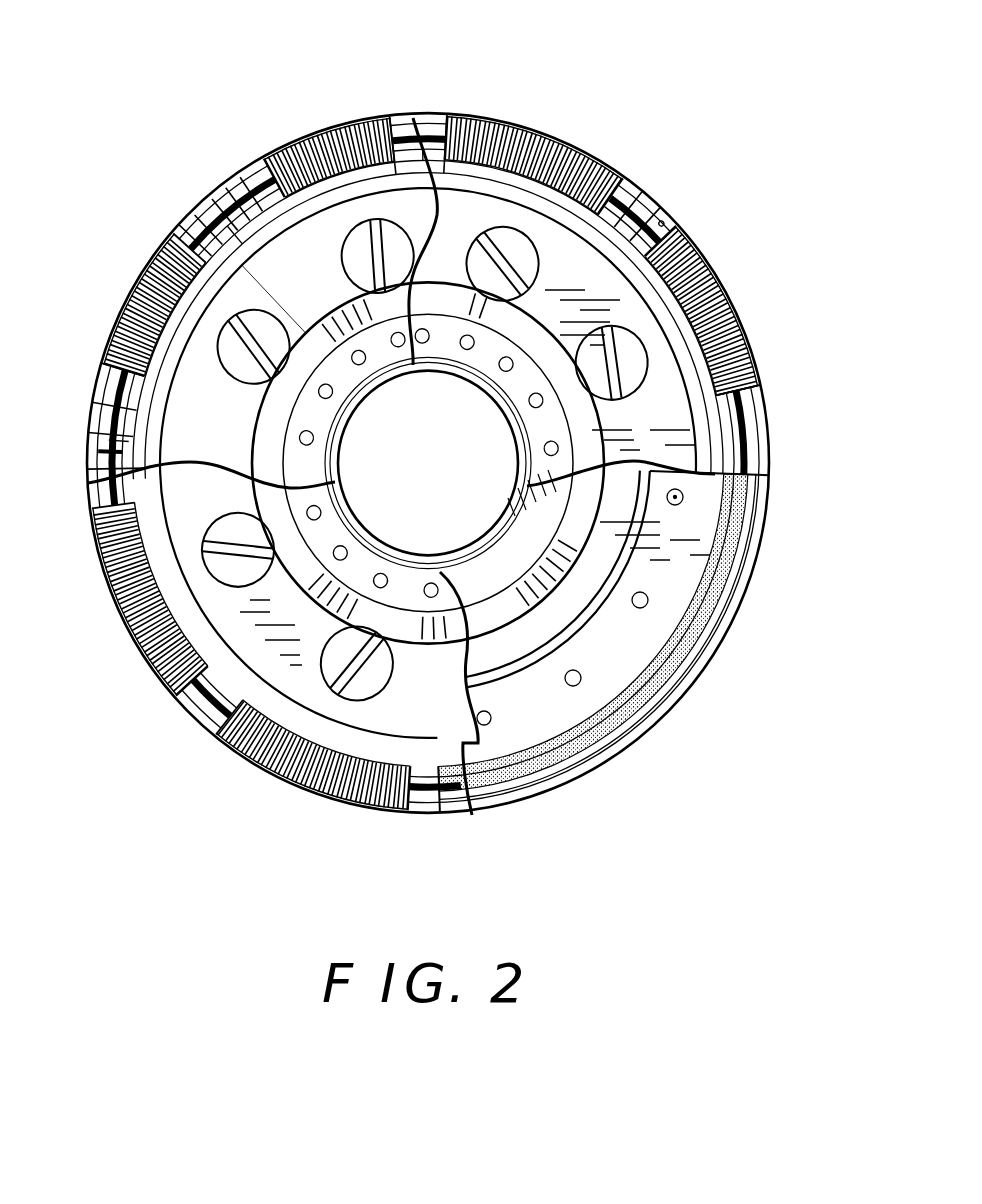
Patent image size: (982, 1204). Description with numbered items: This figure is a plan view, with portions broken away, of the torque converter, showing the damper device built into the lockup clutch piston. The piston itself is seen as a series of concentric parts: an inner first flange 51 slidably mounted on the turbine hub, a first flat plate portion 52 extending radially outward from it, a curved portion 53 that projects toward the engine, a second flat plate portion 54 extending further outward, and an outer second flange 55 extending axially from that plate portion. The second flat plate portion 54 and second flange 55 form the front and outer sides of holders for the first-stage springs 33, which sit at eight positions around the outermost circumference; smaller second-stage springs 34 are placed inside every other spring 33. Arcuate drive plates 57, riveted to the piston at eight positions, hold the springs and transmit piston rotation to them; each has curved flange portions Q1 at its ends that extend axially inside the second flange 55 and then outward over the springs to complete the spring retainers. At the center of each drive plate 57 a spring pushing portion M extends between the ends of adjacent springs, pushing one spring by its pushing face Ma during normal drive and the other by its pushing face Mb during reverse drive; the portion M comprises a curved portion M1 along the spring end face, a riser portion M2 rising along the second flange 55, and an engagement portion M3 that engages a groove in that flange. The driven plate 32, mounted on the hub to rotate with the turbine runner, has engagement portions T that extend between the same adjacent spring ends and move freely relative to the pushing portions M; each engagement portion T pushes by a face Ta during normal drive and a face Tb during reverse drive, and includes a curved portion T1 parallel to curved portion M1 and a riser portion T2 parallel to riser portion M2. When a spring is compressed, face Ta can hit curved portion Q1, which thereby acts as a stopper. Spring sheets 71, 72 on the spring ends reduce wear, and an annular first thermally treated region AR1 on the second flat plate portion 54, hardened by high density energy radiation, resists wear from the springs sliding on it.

The driven plate 32 is at (222, 430).
The springs 33 is at (338, 138).
The springs 34 is at (748, 342).
The first flange 51 is at (512, 508).
The first flat plate portion 52 is at (530, 560).
The curved portion 53 is at (515, 640).
The second flat plate portion 54 is at (700, 567).
The second flange 55 is at (737, 620).
The drive plates 57 is at (382, 115).
The spring sheet 71 is at (666, 228).
The spring sheet 72 is at (763, 388).
The engagement portion T is at (262, 162).
The curved portion T1 is at (93, 410).
The riser portion T2 is at (401, 486).
The pushing face Ta is at (100, 392).
The pushing face Tb is at (95, 440).
The spring pushing portion M is at (400, 118).
The curved portion M1 is at (200, 222).
The riser portion M2 is at (226, 256).
The engagement portion M3 is at (192, 236).
The pushing face Ma is at (172, 241).
The pushing face Mb is at (232, 230).
The curved flange portions Q1 is at (303, 138).
The first thermally treated region AR1 is at (743, 517).